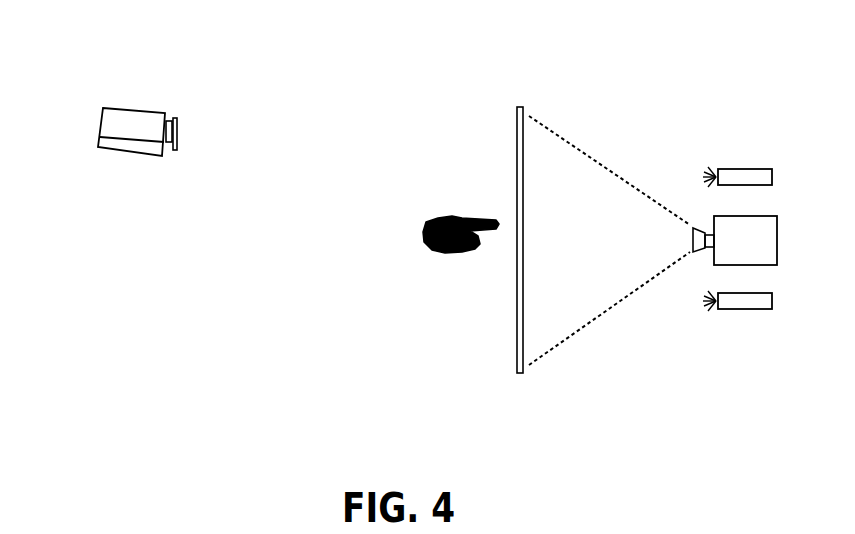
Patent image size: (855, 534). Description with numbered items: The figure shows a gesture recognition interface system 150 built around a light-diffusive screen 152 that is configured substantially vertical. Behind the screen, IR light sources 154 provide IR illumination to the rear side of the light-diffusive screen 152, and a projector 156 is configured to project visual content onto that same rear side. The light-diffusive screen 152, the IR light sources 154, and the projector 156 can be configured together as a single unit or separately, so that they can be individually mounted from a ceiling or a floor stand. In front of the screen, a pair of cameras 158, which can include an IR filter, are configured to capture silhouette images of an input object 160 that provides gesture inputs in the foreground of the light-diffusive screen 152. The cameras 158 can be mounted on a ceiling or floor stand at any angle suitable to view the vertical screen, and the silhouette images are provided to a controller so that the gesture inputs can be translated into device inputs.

The gesture recognition interface system 150 is at (91, 32).
The light-diffusive screen 152 is at (517, 138).
The IR light source 154 is at (742, 169).
The projector 156 is at (777, 222).
The camera 158 is at (135, 110).
The input object 160 is at (448, 223).